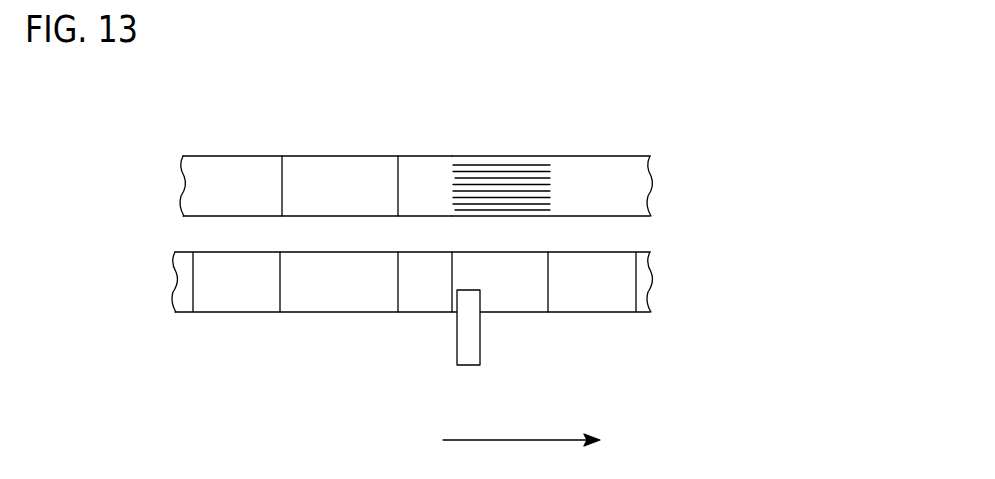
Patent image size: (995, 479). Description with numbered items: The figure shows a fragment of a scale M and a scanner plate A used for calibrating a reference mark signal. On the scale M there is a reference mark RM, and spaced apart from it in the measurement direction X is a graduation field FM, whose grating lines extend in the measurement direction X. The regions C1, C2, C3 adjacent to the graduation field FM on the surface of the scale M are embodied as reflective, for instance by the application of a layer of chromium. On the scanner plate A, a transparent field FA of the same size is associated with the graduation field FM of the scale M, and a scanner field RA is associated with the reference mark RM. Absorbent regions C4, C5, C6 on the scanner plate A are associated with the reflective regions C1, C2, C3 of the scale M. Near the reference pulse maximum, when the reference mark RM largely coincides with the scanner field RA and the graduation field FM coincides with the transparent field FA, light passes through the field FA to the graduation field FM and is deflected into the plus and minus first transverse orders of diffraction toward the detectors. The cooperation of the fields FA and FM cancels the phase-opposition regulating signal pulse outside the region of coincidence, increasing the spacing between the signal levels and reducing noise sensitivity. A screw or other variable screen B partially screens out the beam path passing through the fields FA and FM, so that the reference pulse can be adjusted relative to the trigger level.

The scale M is at (447, 164).
The scanner plate A is at (440, 331).
The reflective region C1 is at (229, 177).
The reference mark RM is at (317, 177).
The reflective region C2 is at (420, 177).
The graduation field FM is at (490, 175).
The reflective region C3 is at (597, 182).
The absorbent region C4 is at (241, 295).
The scanner field RA is at (335, 300).
The absorbent region C5 is at (422, 300).
The transparent field FA is at (508, 302).
The absorbent region C6 is at (590, 302).
The screw or variable screen B is at (463, 357).
The measurement direction X is at (521, 427).